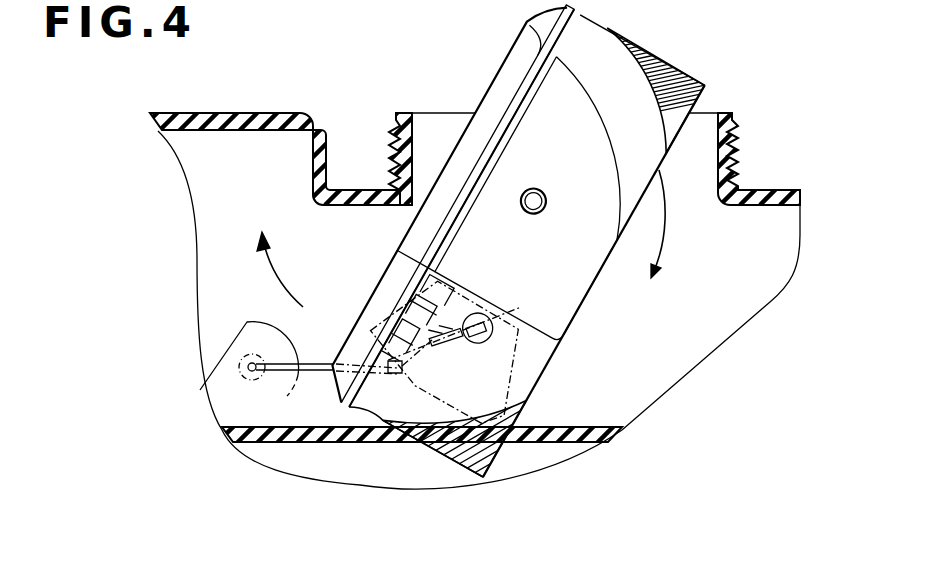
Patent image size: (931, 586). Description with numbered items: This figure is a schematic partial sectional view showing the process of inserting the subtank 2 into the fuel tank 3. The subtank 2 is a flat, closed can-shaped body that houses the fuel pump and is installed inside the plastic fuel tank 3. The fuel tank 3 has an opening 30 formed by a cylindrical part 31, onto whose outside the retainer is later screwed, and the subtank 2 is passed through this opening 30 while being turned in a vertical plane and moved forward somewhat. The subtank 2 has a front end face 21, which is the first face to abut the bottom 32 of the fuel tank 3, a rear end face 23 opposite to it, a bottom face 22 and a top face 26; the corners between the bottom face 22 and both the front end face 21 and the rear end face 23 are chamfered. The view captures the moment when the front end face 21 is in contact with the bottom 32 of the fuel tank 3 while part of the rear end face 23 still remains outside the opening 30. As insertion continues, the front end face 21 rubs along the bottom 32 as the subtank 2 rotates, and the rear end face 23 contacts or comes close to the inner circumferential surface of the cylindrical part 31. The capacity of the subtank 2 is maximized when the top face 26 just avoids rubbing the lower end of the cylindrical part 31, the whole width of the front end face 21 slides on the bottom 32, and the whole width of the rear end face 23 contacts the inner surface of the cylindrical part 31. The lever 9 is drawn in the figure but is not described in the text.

The subtank 2 is at (560, 285).
The fuel tank 3 is at (228, 112).
The lever 9 is at (232, 348).
The front end face 21 is at (447, 435).
The bottom face 22 is at (593, 287).
The rear end face 23 is at (618, 90).
The top face 26 is at (452, 150).
The opening 30 is at (713, 113).
The cylindrical part 31 is at (390, 128).
The bottom 32 is at (567, 437).